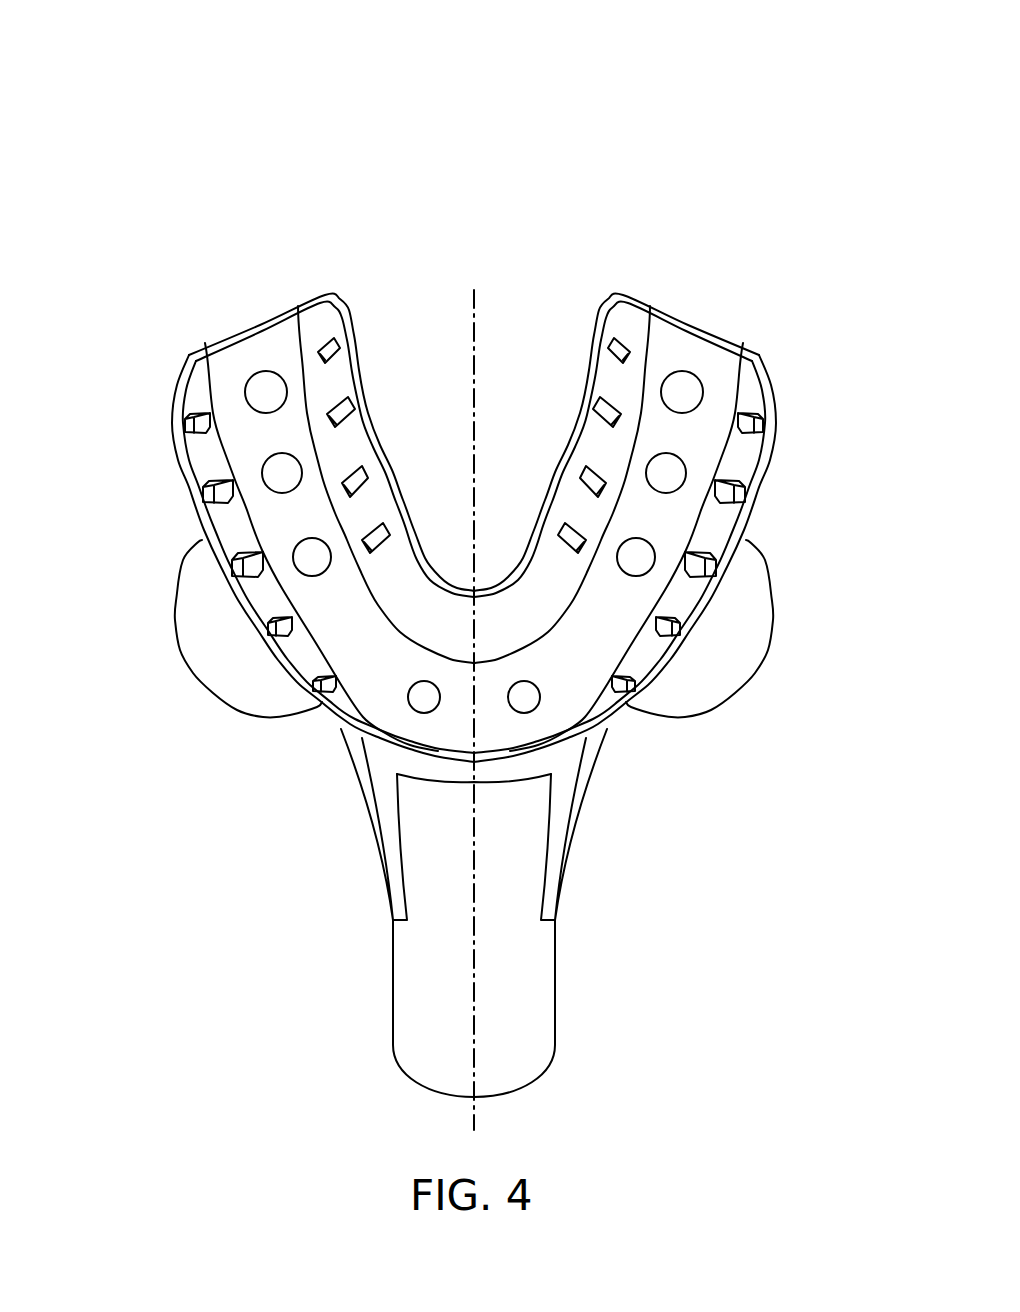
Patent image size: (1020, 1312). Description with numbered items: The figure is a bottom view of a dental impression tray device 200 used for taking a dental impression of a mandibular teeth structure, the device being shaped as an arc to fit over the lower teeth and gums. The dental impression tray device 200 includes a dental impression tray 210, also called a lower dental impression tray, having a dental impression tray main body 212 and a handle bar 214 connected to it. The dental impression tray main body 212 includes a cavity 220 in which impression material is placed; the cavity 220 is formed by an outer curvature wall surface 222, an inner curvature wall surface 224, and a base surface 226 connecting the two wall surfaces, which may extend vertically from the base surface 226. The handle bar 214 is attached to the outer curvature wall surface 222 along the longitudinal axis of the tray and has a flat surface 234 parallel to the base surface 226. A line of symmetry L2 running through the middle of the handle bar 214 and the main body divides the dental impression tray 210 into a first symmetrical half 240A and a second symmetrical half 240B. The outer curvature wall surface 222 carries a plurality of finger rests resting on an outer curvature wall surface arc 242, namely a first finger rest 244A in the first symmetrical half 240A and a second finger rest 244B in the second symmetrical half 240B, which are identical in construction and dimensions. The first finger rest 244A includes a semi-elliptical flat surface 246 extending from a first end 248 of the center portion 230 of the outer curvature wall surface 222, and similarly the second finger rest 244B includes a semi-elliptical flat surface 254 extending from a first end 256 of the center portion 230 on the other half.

The dental impression tray device 200 is at (760, 80).
The dental impression tray 210 is at (762, 803).
The dental impression tray main body 212 is at (158, 466).
The handle bar 214 is at (584, 978).
The cavity 220 is at (232, 370).
The outer curvature wall surface 222 is at (180, 368).
The inner curvature wall surface 224 is at (333, 293).
The base surface 226 is at (262, 317).
The center portion 230 is at (550, 760).
The flat surface 234 is at (407, 1015).
The first symmetrical half 240A is at (165, 227).
The second symmetrical half 240B is at (473, 190).
The outer curvature wall surface arc 242 is at (227, 582).
The first finger rest 244A is at (200, 678).
The second finger rest 244B is at (753, 667).
The flat surface 246 is at (250, 692).
The first end 248 is at (345, 728).
The flat surface 254 is at (722, 677).
The first end 256 is at (610, 728).
The midline axis L2 is at (473, 289).